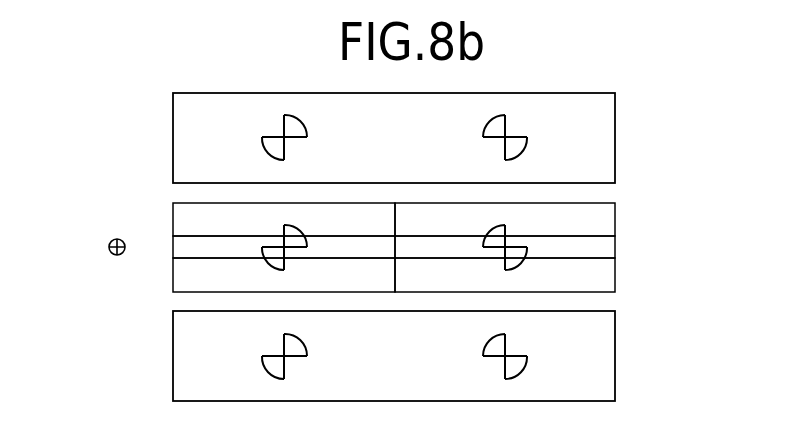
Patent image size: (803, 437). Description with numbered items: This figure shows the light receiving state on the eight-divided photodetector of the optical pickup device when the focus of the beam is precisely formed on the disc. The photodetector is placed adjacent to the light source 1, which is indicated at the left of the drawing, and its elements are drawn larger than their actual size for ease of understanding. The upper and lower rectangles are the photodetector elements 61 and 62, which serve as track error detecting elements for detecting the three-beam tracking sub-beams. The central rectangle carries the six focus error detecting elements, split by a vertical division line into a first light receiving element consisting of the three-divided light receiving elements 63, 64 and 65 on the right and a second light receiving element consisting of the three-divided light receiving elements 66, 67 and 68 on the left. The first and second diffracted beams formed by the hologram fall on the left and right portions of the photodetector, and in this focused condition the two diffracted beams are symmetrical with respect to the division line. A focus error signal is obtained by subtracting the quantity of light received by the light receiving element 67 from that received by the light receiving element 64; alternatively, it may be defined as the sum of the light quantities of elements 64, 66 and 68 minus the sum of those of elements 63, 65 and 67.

The light source 1 is at (108, 248).
The photodetector element 61 is at (597, 131).
The photodetector element 62 is at (596, 353).
The light receiving element 63 is at (599, 217).
The light receiving element 64 is at (605, 247).
The light receiving element 65 is at (605, 278).
The light receiving element 66 is at (192, 215).
The light receiving element 67 is at (187, 247).
The light receiving element 68 is at (187, 277).